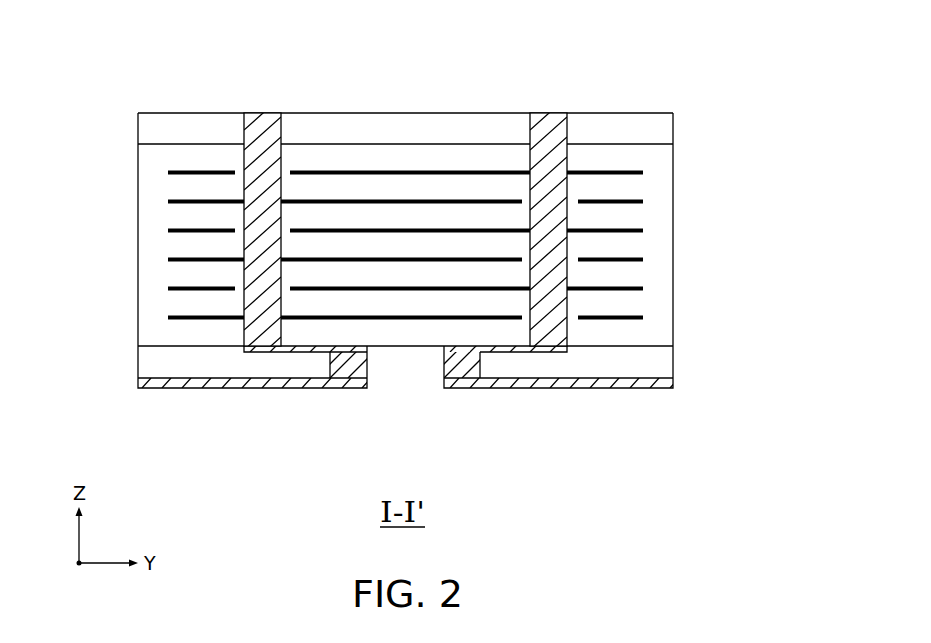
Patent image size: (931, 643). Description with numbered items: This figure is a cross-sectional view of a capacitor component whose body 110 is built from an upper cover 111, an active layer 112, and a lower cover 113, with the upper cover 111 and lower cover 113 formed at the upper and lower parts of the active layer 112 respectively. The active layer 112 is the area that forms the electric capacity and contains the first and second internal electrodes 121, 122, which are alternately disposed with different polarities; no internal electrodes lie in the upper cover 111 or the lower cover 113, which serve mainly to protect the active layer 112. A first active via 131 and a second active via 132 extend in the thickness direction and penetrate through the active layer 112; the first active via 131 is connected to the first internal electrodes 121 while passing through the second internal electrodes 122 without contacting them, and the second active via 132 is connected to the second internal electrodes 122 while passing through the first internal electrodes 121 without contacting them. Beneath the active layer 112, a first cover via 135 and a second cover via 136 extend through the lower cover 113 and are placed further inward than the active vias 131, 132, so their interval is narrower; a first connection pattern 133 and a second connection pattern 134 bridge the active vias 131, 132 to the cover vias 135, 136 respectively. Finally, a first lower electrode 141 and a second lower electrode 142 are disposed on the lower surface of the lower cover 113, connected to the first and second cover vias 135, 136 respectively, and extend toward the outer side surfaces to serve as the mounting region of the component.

The body 110 is at (469, 250).
The upper cover 111 is at (673, 125).
The active layer 112 is at (673, 233).
The lower cover 113 is at (437, 367).
The first internal electrode 121 is at (168, 202).
The second internal electrode 122 is at (168, 172).
The first active via 131 is at (262, 125).
The second active via 132 is at (549, 125).
The first connection pattern 133 is at (297, 352).
The second connection pattern 134 is at (518, 352).
The first cover via 135 is at (352, 364).
The second cover via 136 is at (457, 360).
The first lower electrode 141 is at (189, 382).
The second lower electrode 142 is at (620, 382).